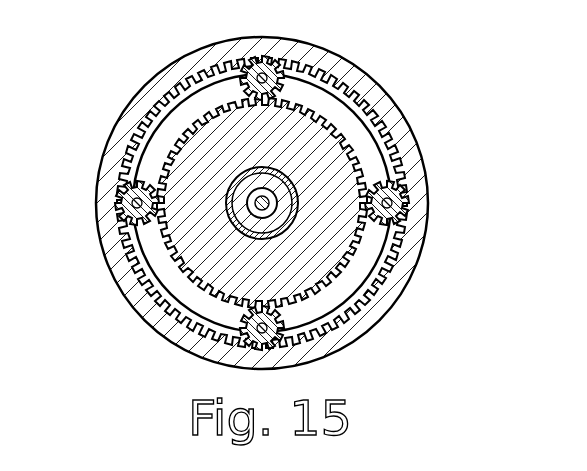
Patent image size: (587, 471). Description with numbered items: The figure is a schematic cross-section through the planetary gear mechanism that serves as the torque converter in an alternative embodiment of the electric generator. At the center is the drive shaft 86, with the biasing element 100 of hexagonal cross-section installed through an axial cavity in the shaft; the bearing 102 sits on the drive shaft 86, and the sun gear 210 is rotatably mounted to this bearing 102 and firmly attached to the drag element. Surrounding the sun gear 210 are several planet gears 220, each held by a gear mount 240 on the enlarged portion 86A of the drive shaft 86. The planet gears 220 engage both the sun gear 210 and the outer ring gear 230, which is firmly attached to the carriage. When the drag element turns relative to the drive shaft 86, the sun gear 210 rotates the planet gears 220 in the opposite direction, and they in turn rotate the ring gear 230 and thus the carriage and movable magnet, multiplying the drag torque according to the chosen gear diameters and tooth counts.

The ring gear 230 is at (150, 85).
The sun gear 210 is at (314, 114).
The biasing element 100 is at (270, 190).
The planet gear 220 is at (388, 180).
The gear mount 240 is at (131, 228).
The drive shaft 86 is at (227, 183).
The enlarged portion 86A is at (134, 304).
The bearing 102 is at (270, 240).